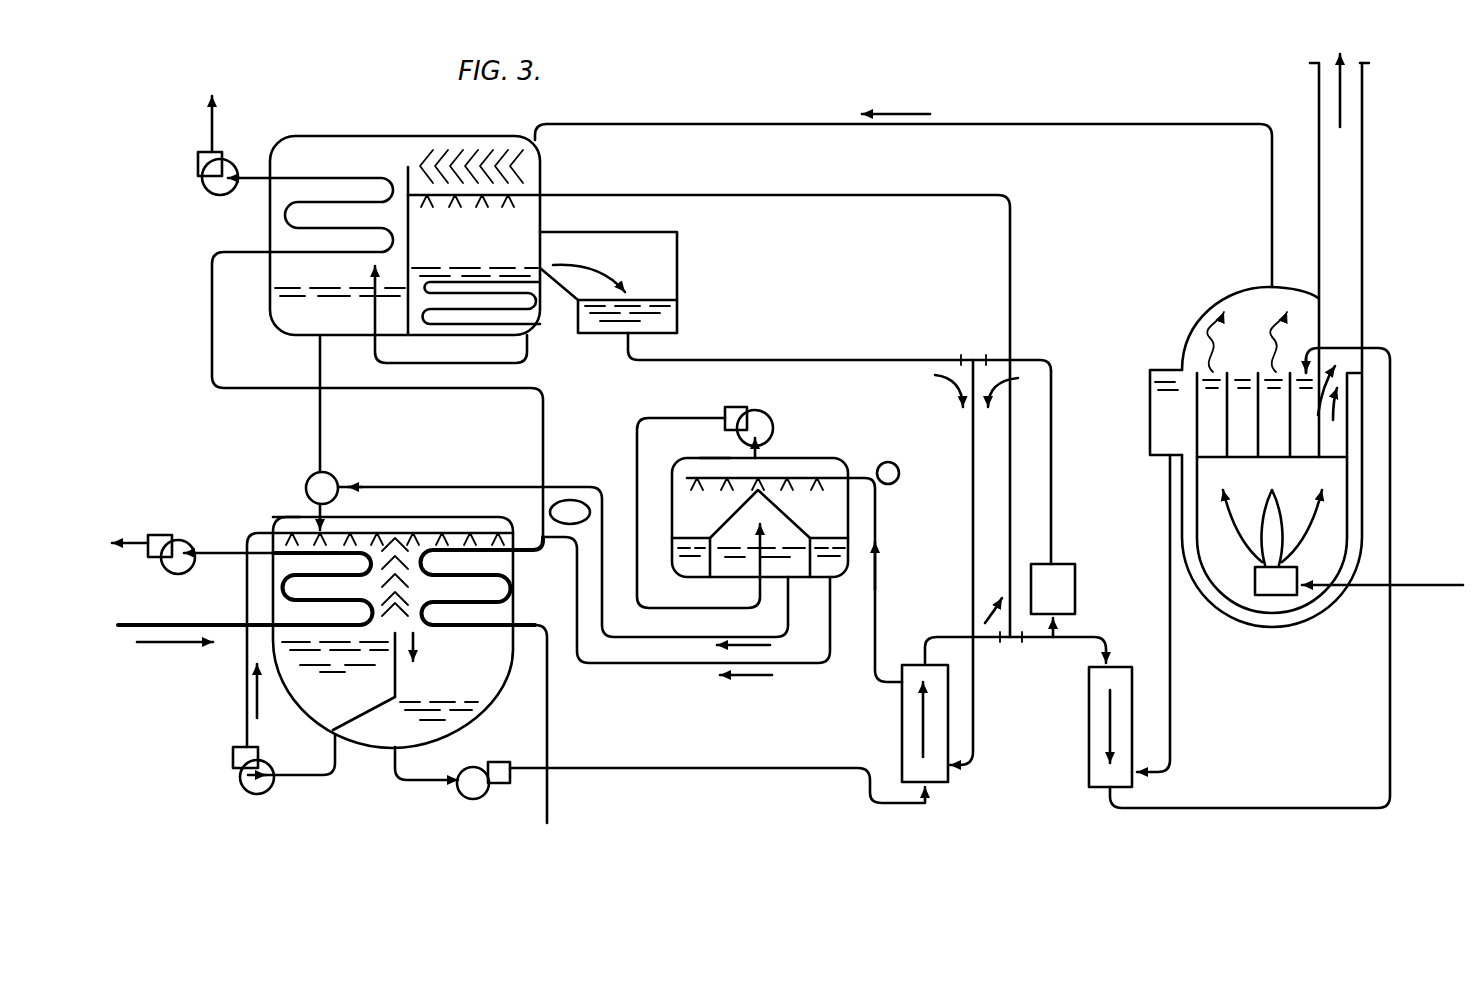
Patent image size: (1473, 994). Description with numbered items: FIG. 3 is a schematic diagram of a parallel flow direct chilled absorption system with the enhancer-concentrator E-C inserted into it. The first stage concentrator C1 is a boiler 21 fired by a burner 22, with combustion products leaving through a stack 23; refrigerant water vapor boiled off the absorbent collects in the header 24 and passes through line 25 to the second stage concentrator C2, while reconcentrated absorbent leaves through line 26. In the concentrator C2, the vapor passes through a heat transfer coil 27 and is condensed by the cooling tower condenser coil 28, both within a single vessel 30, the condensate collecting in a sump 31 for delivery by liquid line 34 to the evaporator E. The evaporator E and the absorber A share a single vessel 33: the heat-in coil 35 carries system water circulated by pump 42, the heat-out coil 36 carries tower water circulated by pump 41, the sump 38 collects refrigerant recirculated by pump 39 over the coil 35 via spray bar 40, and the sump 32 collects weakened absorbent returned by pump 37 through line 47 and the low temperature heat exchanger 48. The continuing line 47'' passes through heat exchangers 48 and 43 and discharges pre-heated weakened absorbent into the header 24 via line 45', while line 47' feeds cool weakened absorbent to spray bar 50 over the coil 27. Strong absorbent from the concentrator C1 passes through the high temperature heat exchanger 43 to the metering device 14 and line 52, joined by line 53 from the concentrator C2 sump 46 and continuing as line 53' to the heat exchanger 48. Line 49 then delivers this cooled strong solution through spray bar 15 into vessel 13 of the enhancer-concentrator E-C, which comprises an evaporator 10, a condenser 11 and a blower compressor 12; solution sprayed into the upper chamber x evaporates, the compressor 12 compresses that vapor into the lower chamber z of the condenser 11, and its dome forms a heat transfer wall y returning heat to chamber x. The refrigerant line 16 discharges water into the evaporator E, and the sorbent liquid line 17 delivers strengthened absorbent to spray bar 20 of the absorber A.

The evaporator 10 is at (796, 449).
The condenser 11 is at (733, 508).
The blower compressor 12 is at (770, 413).
The single vessel 13 is at (713, 456).
The metering device 14 is at (1080, 582).
The spray bar 15 is at (830, 477).
The refrigerant line 16 is at (468, 484).
The sorbent liquid line 17 is at (577, 593).
The spray bar 20 is at (460, 527).
The boiler 21 is at (1375, 470).
The burner 22 is at (1273, 587).
The stack 23 is at (1367, 228).
The header 24 is at (1238, 310).
The line 25 is at (1076, 124).
The line 26 is at (1173, 685).
The heat transfer coil 27 is at (533, 308).
The refrigerant condenser coil 28 is at (287, 217).
The single vessel 30 is at (347, 136).
The sump 31 is at (302, 323).
The sump 32 is at (373, 733).
The single vessel 33 is at (477, 710).
The liquid line 34 is at (323, 420).
The heat-in coil 35 is at (287, 590).
The heat-out coil 36 is at (435, 627).
The pump 37 is at (468, 793).
The sump 38 is at (312, 698).
The pump 39 is at (247, 788).
The spray bar 40 is at (300, 533).
The pump 41 is at (208, 188).
The pump 42 is at (162, 567).
The high temperature heat exchanger 43 is at (1098, 763).
The line 45' is at (1250, 597).
The sump 46 is at (663, 318).
The line 47 is at (717, 789).
The line 47' is at (814, 416).
The continuing line 47'' is at (1015, 668).
The low temperature heat exchanger 48 is at (900, 735).
The line 49 is at (872, 672).
The spray bar 50 is at (503, 195).
The line 52 is at (1053, 466).
The line 53 is at (839, 365).
The line 53' is at (936, 562).
The absorber A is at (367, 671).
The evaporator E is at (312, 512).
The enhancer-concentrator E-C is at (728, 498).
The first stage concentrator C1 is at (1289, 435).
The second stage concentrator C2 is at (380, 213).
The upper chamber x is at (790, 497).
The heat transfer wall y is at (797, 515).
The lower chamber z is at (780, 534).